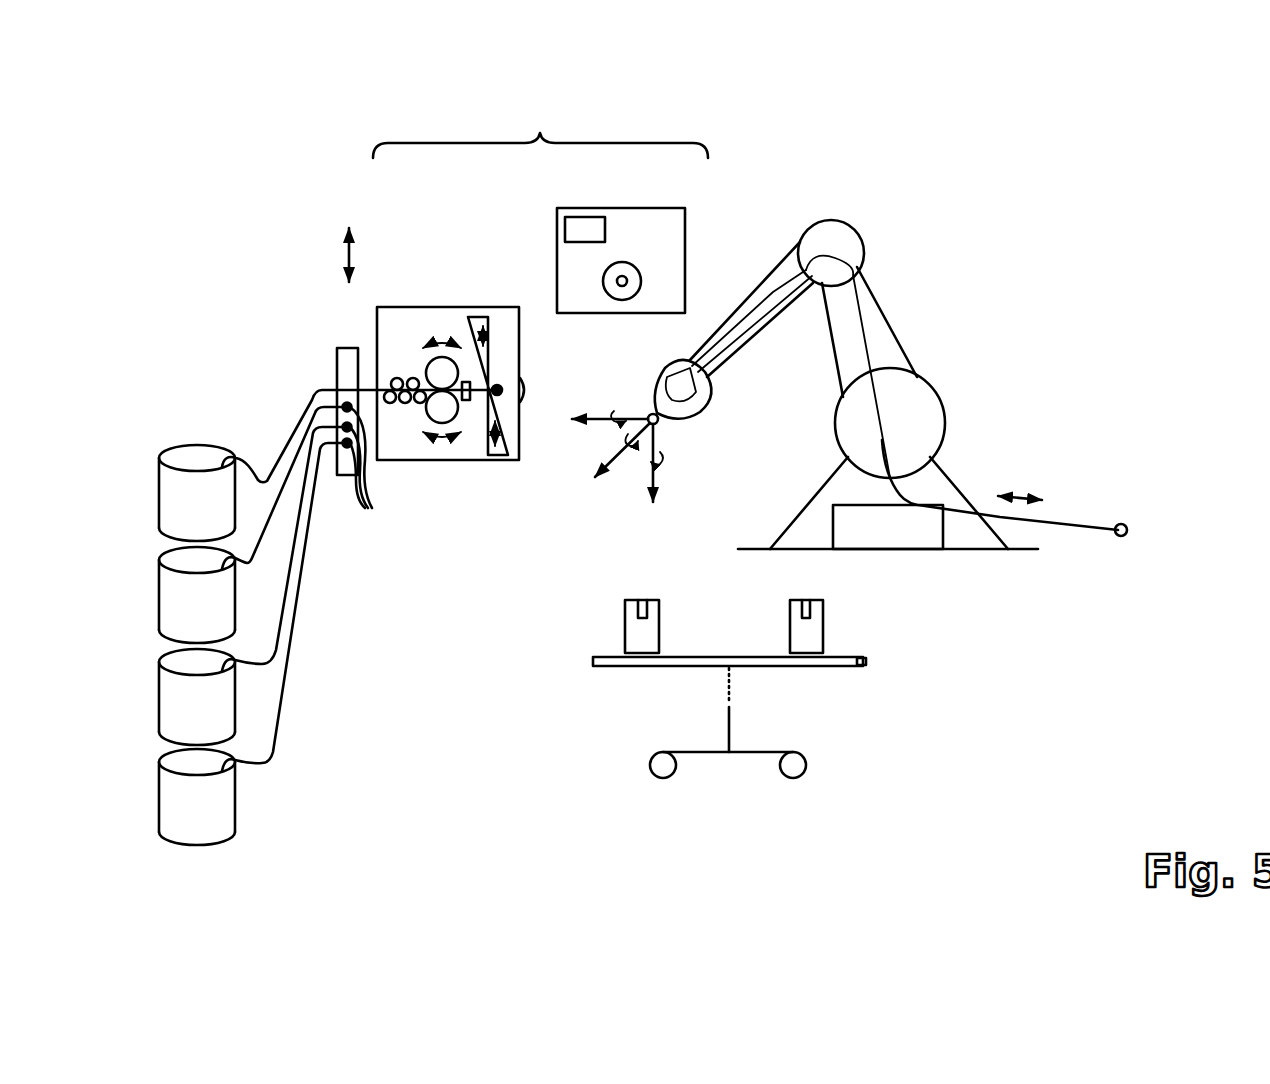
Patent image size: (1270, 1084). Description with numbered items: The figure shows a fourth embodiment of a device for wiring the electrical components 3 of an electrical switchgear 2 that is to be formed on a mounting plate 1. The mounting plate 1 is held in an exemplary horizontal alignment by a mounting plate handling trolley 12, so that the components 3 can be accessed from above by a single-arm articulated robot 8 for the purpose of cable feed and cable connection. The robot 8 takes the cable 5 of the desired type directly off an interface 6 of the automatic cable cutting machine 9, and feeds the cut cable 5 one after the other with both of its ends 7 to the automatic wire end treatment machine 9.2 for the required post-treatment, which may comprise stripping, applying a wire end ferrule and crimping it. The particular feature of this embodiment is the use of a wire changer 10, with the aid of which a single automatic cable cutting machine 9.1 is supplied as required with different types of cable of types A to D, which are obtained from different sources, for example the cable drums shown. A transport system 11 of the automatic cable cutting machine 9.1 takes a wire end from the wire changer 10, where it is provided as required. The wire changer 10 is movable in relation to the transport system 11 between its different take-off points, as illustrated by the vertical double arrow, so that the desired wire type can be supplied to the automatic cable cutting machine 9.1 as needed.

The mounting plate 1 is at (866, 662).
The electrical switchgear 2 is at (740, 617).
The electrical components 3 is at (642, 632).
The cable 5 is at (236, 460).
The interface 6 is at (526, 390).
The cable ends 7 is at (1122, 537).
The robot 8 is at (843, 238).
The automatic cable cutting machine 9 is at (540, 125).
The automatic cable cutting machine 9.1 is at (443, 324).
The automatic wire end treatment machine 9.2 is at (660, 226).
The wire changer 10 is at (342, 321).
The transport system 11 is at (404, 403).
The mounting plate handling trolley 12 is at (763, 750).